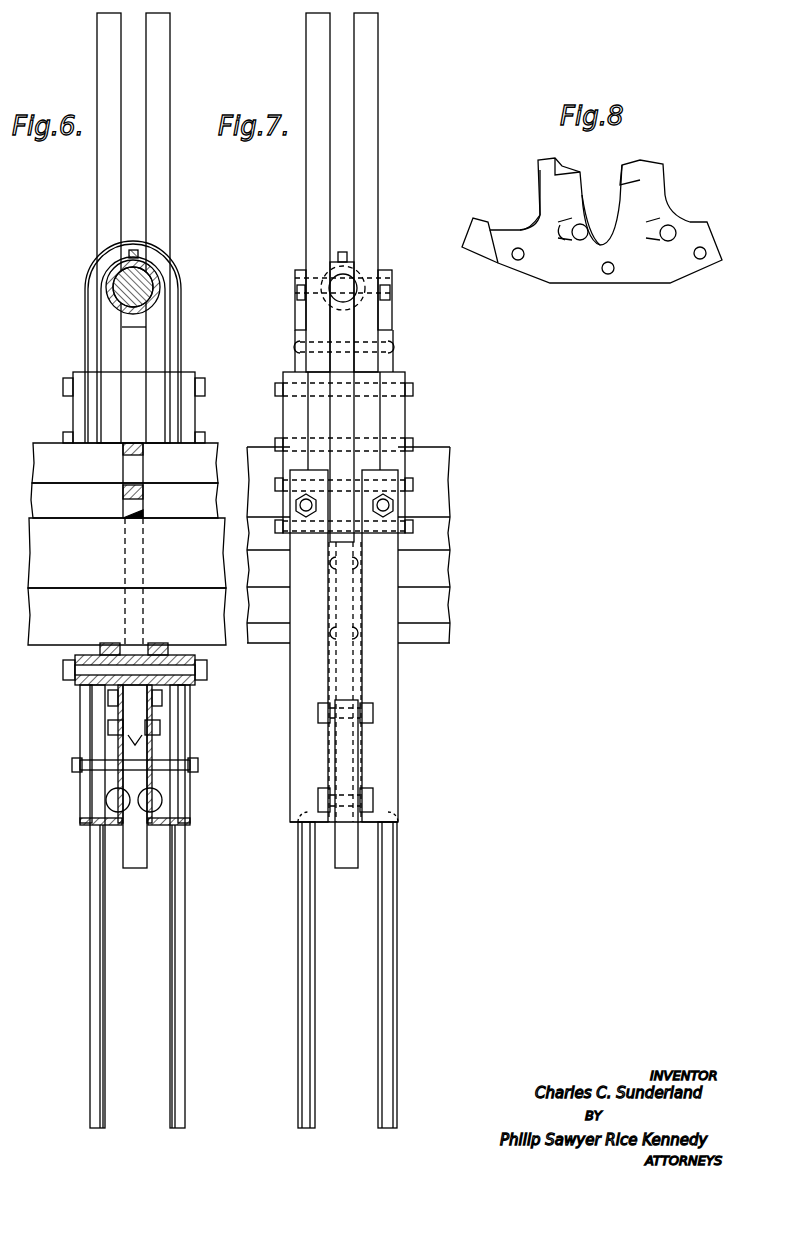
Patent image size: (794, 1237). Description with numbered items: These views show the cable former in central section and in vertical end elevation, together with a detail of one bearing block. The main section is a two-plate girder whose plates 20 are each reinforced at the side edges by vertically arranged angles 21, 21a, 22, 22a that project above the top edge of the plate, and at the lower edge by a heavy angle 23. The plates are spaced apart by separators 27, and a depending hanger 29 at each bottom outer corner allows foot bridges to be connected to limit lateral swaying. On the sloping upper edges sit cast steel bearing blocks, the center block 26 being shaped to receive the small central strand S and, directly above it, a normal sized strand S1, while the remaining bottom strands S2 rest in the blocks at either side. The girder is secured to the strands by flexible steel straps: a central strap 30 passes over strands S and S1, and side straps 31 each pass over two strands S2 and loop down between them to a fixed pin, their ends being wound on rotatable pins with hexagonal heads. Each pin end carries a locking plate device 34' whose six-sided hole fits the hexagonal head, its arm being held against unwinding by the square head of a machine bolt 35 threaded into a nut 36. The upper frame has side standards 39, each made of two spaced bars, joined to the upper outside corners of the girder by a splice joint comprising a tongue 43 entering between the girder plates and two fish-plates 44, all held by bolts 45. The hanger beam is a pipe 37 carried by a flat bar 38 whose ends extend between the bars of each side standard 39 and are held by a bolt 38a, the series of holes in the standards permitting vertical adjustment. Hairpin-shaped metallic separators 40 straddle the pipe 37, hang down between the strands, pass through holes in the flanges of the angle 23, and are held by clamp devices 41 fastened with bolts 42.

In FIG. 6, the plates 20 is at (118, 792).
In FIG. 7, the plates 20 is at (365, 759).
In FIG. 7, the angle 21 is at (300, 673).
In FIG. 7, the angle 21a is at (380, 672).
In FIG. 6, the angle 22 is at (80, 735).
In FIG. 6, the angle 22a is at (188, 748).
In FIG. 6, the heavy angle 23 is at (92, 823).
In FIG. 7, the heavy angle 23 is at (305, 820).
In FIG. 6, the center bearing block 26 is at (98, 650).
In FIG. 8, the center bearing block 26 is at (650, 268).
In FIG. 7, the separators 27 is at (348, 730).
In FIG. 6, the depending hanger 29 is at (138, 858).
In FIG. 7, the depending hanger 29 is at (348, 860).
In FIG. 6, the central strap 30 is at (140, 518).
In FIG. 6, the straps 31 is at (125, 498).
In FIG. 6, the locking plate device 34' is at (128, 708).
In FIG. 6, the machine bolt 35 is at (158, 725).
In FIG. 6, the nut 36 is at (148, 741).
In FIG. 6, the pipe 37 is at (158, 293).
In FIG. 7, the pipe 37 is at (345, 292).
In FIG. 6, the flat bar 38 is at (135, 283).
In FIG. 7, the flat bar 38 is at (368, 280).
In FIG. 7, the bolt 38a is at (392, 298).
In FIG. 6, the side standards 39 is at (110, 80).
In FIG. 7, the side standards 39 is at (313, 72).
In FIG. 6, the metallic separators 40 is at (180, 325).
In FIG. 7, the metallic separators 40 is at (380, 955).
In FIG. 6, the clamp devices 41 is at (116, 776).
In FIG. 6, the bolts 42 is at (108, 765).
In FIG. 7, the tongue 43 is at (340, 400).
In FIG. 7, the fish-plates 44 is at (365, 425).
In FIG. 7, the bolts 45 is at (413, 446).
In FIG. 6, the central strand S is at (127, 616).
In FIG. 6, the normal size strand S1 is at (127, 553).
In FIG. 6, the normal size strands S2 is at (124, 480).